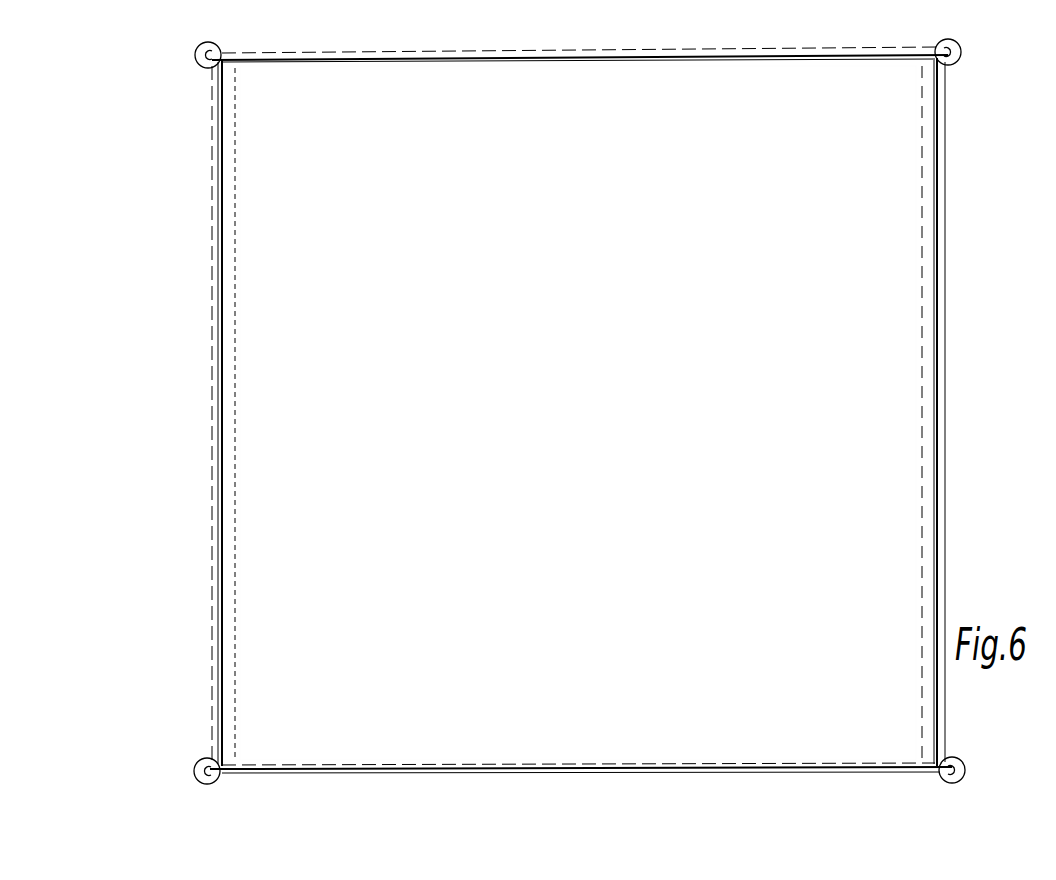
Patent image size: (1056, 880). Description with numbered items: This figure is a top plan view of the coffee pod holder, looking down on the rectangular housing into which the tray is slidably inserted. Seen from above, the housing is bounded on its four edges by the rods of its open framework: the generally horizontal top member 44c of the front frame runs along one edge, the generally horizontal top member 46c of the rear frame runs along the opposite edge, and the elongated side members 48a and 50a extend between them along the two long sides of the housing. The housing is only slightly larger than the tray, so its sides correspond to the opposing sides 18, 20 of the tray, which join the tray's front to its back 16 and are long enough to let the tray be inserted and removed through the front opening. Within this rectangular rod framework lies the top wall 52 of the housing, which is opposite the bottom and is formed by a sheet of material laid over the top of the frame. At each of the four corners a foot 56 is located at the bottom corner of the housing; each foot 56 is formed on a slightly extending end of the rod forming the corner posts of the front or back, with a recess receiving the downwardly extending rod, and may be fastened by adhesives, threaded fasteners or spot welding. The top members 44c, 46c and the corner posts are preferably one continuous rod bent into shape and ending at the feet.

The back 16 is at (590, 415).
The side 18 is at (212, 255).
The side 20 is at (953, 257).
The top member 44c is at (839, 54).
The top member 46c is at (895, 770).
The side member 48a is at (216, 380).
The side member 50a is at (945, 418).
The top wall 52 is at (659, 405).
The foot 56 is at (203, 70).